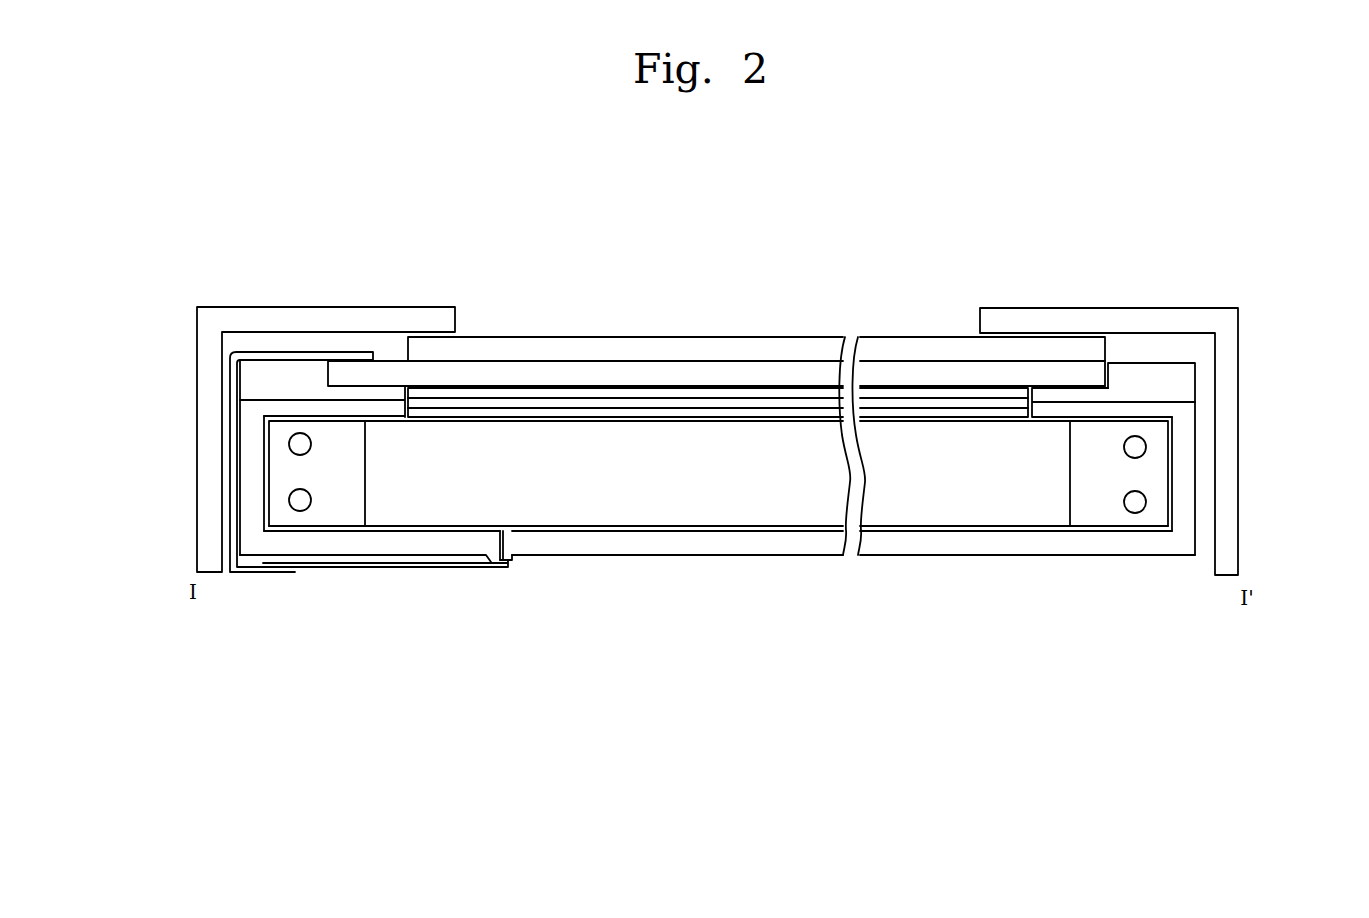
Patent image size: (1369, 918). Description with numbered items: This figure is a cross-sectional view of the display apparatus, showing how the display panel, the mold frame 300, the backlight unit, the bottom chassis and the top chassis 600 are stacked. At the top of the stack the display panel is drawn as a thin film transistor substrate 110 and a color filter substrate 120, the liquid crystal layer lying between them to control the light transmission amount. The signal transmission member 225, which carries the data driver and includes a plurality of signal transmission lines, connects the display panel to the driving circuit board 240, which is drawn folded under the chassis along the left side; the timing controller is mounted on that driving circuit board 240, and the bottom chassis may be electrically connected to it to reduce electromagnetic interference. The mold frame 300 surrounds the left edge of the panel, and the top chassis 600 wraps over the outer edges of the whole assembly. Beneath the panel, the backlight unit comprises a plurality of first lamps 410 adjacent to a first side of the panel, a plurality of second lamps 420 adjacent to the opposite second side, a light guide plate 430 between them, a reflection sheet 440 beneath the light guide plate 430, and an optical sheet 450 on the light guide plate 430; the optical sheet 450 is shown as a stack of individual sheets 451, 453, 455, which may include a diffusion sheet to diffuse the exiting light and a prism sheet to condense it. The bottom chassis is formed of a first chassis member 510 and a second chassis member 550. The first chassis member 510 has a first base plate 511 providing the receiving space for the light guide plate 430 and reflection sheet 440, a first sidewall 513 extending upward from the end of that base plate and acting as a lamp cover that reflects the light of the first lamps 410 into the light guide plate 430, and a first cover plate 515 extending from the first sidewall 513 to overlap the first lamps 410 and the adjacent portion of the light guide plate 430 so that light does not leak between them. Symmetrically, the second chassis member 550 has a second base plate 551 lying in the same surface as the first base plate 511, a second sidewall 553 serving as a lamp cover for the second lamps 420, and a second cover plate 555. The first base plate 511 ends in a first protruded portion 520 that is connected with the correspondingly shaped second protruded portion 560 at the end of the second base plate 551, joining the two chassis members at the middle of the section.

The thin film transistor substrate 110 is at (578, 373).
The color filter substrate 120 is at (515, 345).
The signal transmission member 225 is at (352, 355).
The driving circuit board 240 is at (383, 568).
The mold frame 300 is at (252, 378).
The first lamps 410 is at (300, 503).
The second lamps 420 is at (1135, 505).
The light guide plate 430 is at (783, 505).
The reflection sheet 440 is at (716, 532).
The optical sheet 450 is at (718, 325).
The diffusion sheet 451 is at (648, 273).
The prism sheet 453 is at (705, 403).
The protective sheet 455 is at (657, 393).
The first chassis member 510 is at (286, 461).
The first base plate 511 is at (315, 539).
The first sidewall 513 is at (250, 469).
The first cover plate 515 is at (273, 406).
The first protruded portion 520 is at (490, 562).
The second chassis member 550 is at (937, 492).
The second base plate 551 is at (909, 537).
The second sidewall 553 is at (1185, 472).
The second cover plate 555 is at (1163, 410).
The second protruded portion 560 is at (515, 558).
The top chassis 600 is at (282, 321).